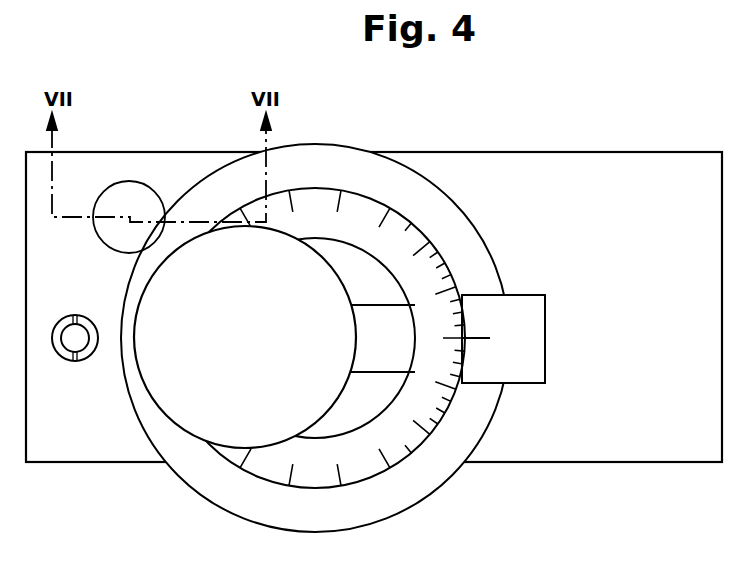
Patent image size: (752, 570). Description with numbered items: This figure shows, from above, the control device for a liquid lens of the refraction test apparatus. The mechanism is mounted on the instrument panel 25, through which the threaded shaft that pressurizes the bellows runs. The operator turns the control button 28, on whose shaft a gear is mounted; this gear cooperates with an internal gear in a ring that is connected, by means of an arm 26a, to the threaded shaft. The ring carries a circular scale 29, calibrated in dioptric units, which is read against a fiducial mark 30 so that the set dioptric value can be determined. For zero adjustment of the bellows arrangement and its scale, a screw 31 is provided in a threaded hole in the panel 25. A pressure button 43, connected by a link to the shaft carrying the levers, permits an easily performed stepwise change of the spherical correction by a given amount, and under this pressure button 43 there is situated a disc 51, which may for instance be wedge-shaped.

The instrument panel 25 is at (629, 173).
The arm 26a is at (373, 353).
The control button 28 is at (172, 407).
The circular scale 29 is at (438, 268).
The fiducial mark 30 is at (482, 338).
The screw 31 is at (66, 352).
The pressure button 43 is at (124, 200).
The disc 51 is at (233, 493).